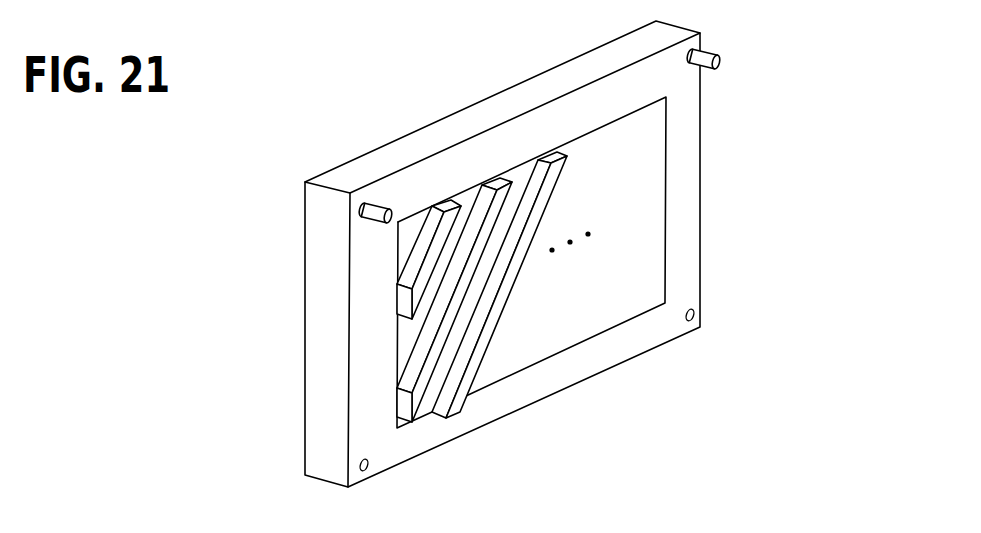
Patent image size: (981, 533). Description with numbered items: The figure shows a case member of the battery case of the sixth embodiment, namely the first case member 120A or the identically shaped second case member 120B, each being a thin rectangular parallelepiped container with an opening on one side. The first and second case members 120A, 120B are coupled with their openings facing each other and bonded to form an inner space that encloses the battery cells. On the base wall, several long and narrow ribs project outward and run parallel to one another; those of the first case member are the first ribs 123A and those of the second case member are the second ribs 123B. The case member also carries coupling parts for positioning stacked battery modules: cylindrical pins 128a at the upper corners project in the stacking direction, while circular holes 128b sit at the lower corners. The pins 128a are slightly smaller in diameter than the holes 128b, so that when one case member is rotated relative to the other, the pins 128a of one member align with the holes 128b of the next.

The first case member 120A is at (355, 161).
The second case member 120B is at (502, 254).
The first ribs 123A is at (482, 200).
The second ribs 123B is at (494, 223).
The pins 128a is at (371, 217).
The holes 128b is at (362, 461).